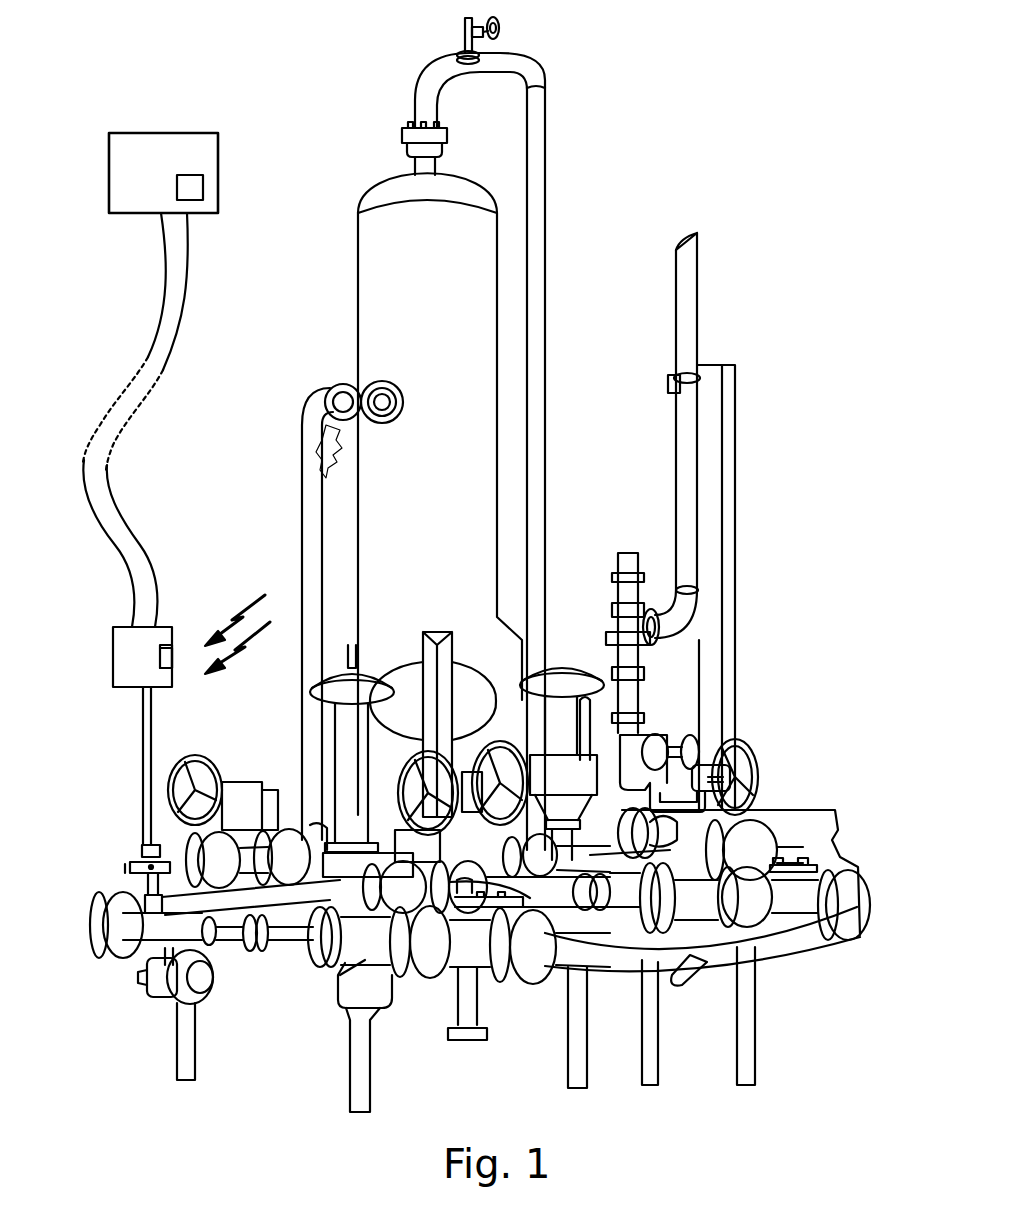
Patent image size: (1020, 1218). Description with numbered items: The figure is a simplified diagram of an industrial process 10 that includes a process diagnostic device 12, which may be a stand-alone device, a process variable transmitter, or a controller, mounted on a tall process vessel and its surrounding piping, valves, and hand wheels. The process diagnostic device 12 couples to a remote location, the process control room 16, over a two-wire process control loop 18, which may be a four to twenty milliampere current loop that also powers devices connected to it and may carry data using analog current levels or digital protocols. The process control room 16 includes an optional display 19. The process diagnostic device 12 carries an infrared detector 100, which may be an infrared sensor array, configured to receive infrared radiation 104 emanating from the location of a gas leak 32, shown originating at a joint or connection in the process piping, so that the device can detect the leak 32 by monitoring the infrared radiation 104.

The industrial process 10 is at (705, 152).
The process diagnostic device 12 is at (135, 662).
The process control room 16 is at (163, 173).
The two-wire process control loop 18 is at (168, 267).
The display 19 is at (190, 188).
The gas leak 32 is at (333, 455).
The infrared detector 100 is at (175, 655).
The infrared radiation 104 is at (266, 628).